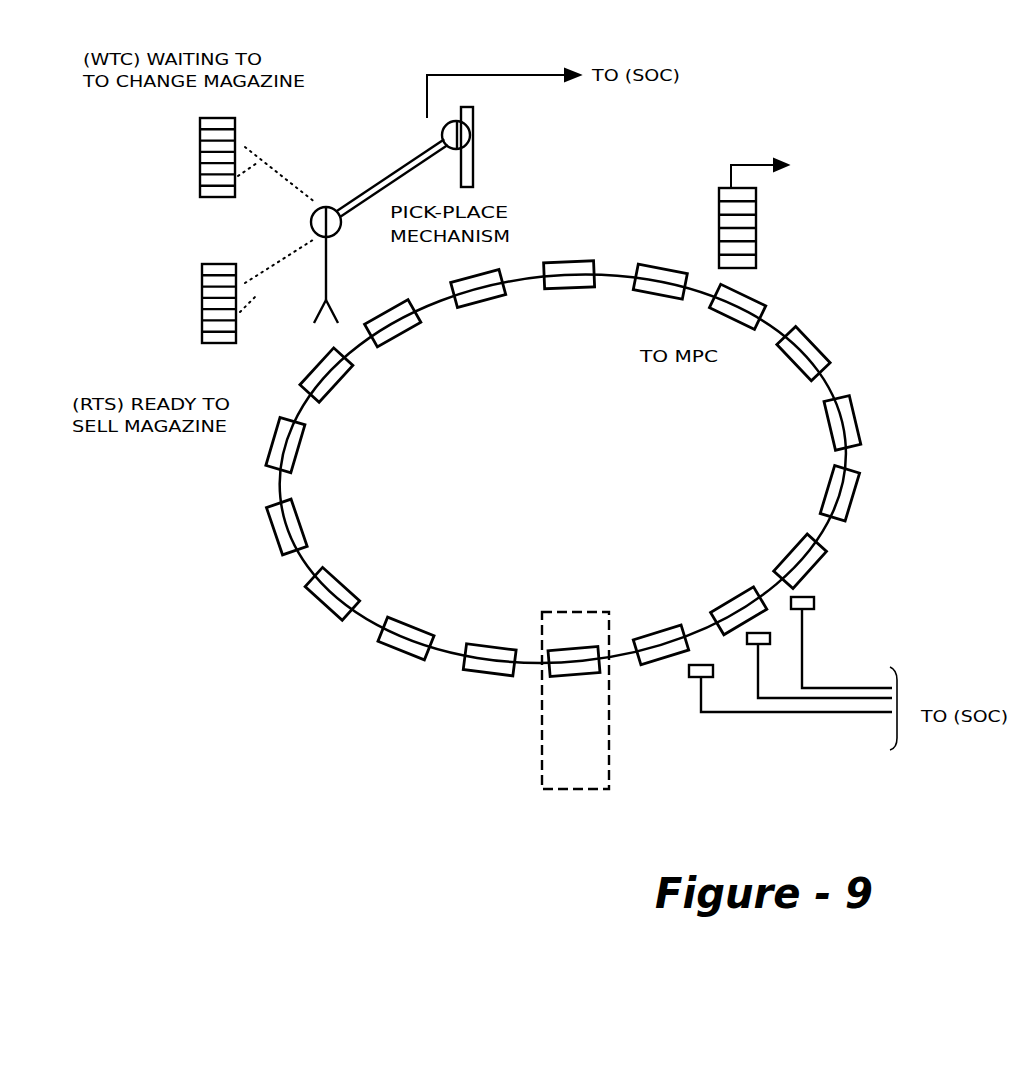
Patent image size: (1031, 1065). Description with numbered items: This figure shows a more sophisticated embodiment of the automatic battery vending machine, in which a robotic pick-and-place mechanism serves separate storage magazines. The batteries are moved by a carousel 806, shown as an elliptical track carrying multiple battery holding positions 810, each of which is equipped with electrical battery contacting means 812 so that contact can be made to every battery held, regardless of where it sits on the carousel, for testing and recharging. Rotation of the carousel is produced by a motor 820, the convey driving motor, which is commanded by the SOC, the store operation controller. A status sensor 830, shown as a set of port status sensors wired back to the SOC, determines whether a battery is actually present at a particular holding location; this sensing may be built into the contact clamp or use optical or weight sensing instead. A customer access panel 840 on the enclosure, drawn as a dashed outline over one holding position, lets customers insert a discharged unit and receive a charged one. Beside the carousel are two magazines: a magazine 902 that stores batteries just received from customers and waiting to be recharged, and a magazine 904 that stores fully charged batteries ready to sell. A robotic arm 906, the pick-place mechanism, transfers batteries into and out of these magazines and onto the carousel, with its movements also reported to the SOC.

The carousel 806 is at (857, 422).
The battery holding position 810 is at (833, 544).
The electrical battery contacting means 812 is at (769, 562).
The motor 820 is at (728, 247).
The status sensor 830 is at (825, 721).
The access panel 840 is at (555, 779).
The magazine 902 is at (235, 130).
The magazine 904 is at (214, 344).
The robotic arm 906 is at (402, 161).